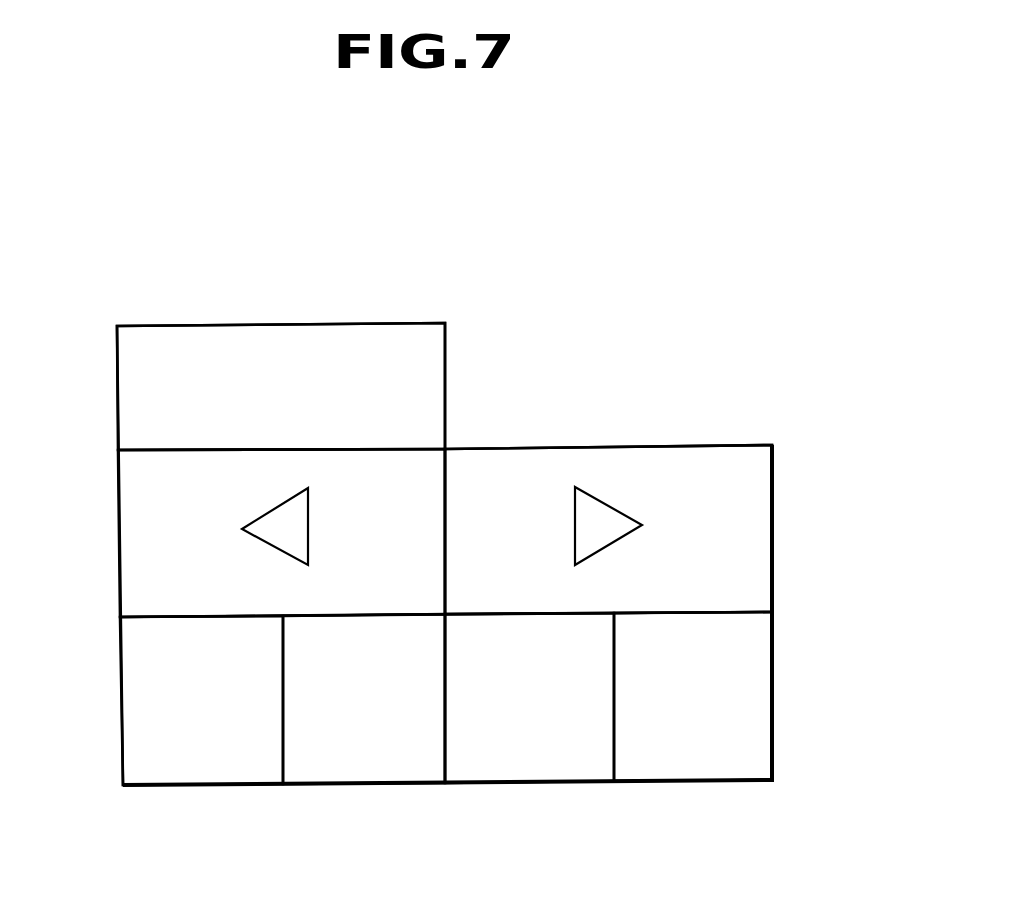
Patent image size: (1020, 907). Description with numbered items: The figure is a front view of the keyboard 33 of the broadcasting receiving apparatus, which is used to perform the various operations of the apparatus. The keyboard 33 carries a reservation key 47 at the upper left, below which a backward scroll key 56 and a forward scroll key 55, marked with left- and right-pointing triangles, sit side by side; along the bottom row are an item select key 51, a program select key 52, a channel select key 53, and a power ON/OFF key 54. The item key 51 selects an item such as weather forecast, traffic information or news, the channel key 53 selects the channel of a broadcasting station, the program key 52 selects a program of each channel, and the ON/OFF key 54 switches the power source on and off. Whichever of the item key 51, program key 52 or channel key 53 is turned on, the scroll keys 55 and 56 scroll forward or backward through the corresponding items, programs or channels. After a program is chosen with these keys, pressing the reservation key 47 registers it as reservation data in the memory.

The keyboard 33 is at (720, 387).
The reservation key 47 is at (383, 323).
The item select key 51 is at (193, 765).
The program select key 52 is at (372, 765).
The channel select key 53 is at (537, 758).
The power ON/OFF key 54 is at (688, 757).
The forward scroll key 55 is at (773, 532).
The backward scroll key 56 is at (120, 565).